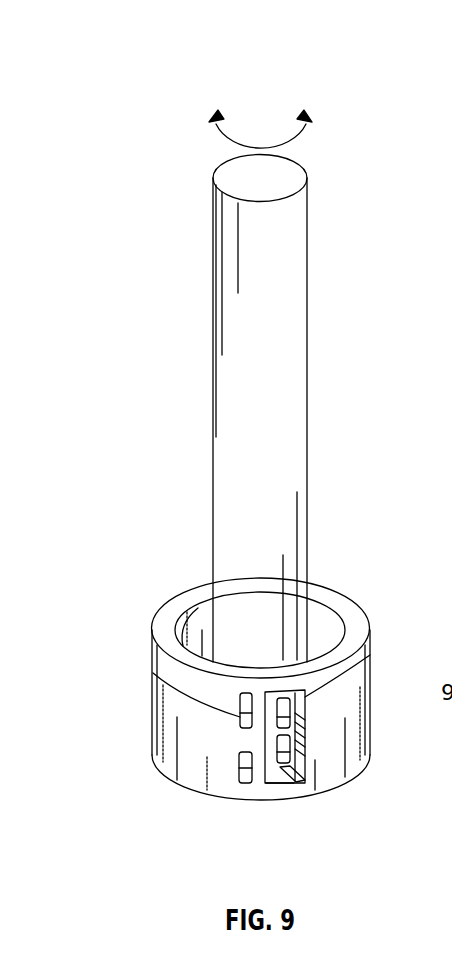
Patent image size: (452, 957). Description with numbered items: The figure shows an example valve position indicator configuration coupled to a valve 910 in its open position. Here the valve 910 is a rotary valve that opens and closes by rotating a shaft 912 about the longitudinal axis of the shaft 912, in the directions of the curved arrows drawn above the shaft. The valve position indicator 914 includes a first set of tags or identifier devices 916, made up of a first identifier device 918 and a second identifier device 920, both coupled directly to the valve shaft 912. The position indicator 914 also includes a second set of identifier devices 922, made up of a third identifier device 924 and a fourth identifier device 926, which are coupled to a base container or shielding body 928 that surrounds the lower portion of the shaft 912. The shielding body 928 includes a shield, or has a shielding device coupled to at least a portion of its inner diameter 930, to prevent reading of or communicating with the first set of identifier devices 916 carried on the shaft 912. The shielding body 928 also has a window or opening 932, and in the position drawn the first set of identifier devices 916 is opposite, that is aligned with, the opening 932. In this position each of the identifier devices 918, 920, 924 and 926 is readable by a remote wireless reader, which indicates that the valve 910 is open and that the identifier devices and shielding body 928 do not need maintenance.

The valve 910 is at (178, 52).
The shaft 912 is at (297, 298).
The valve position indicator 914 is at (95, 572).
The first set of identifier devices 916 is at (275, 778).
The first identifier device 918 is at (372, 662).
The second identifier device 920 is at (300, 784).
The second set of identifier devices 922 is at (198, 759).
The third identifier device 924 is at (152, 674).
The fourth identifier device 926 is at (244, 784).
The shielding body 928 is at (355, 615).
The inner diameter 930 is at (197, 620).
The opening 932 is at (308, 752).